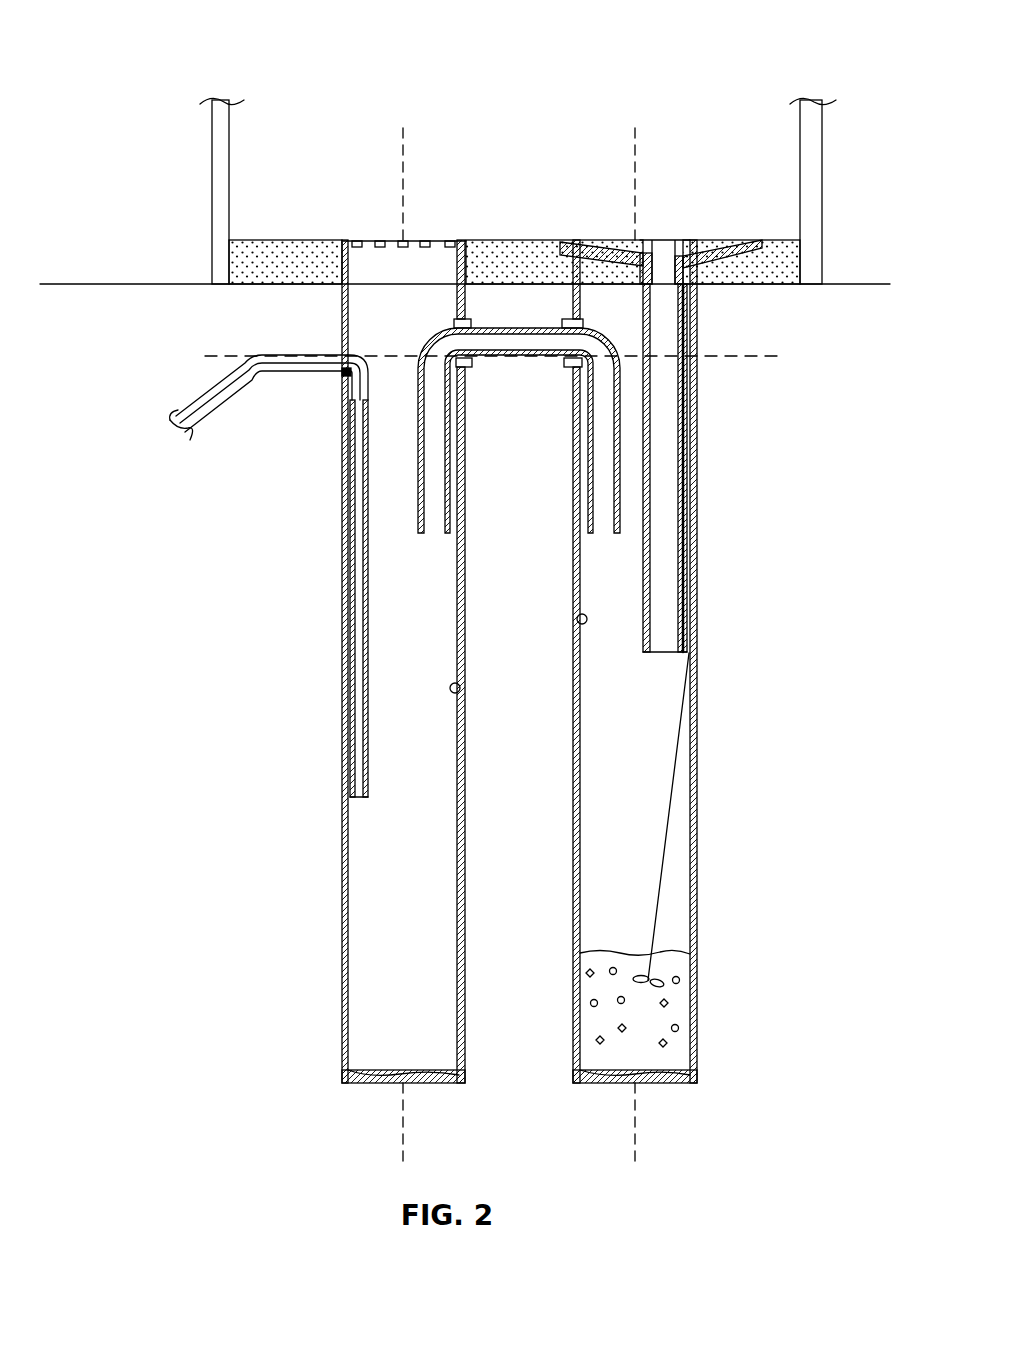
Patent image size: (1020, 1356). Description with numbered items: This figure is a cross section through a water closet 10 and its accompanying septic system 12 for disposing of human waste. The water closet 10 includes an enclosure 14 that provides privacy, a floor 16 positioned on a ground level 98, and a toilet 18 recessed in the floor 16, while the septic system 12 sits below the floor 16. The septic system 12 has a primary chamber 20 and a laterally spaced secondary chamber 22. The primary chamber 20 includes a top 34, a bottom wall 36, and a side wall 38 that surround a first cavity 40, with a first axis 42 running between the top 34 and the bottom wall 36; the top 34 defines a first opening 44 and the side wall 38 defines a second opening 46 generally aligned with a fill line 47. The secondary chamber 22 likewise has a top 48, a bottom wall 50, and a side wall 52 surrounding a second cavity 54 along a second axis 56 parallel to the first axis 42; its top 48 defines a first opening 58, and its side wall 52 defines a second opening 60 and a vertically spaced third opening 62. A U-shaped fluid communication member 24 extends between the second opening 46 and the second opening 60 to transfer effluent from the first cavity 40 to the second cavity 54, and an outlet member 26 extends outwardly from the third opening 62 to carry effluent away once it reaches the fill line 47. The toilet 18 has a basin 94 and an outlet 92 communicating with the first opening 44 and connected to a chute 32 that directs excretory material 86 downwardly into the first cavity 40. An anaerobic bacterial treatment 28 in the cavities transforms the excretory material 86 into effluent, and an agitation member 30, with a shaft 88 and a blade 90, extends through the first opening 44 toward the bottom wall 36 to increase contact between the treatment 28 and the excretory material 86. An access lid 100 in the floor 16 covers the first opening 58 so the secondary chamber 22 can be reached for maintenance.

The water closet 10 is at (124, 40).
The septic system 12 is at (142, 668).
The enclosure 14 is at (212, 165).
The floor 16 is at (277, 240).
The toilet 18 is at (660, 240).
The primary chamber 20 is at (575, 662).
The secondary chamber 22 is at (343, 758).
The fluid communication member 24 is at (545, 355).
The outlet member 26 is at (297, 355).
The anaerobic bacterial treatment 28 is at (596, 1040).
The agitation member 30 is at (692, 795).
The chute 32 is at (643, 540).
The top 34 is at (613, 274).
The bottom wall 36 is at (665, 1073).
The side wall 38 is at (577, 622).
The first cavity 40 is at (621, 812).
The first axis 42 is at (635, 1130).
The first opening 44 is at (628, 286).
The second opening 46 is at (572, 368).
The fill line 47 is at (752, 358).
The top 48 is at (380, 242).
The bottom wall 50 is at (385, 1070).
The side wall 52 is at (460, 692).
The second cavity 54 is at (389, 812).
The second axis 56 is at (403, 1130).
The first opening 58 is at (435, 243).
The second opening 60 is at (472, 366).
The third opening 62 is at (346, 382).
The excretory material 86 is at (590, 1003).
The shaft 88 is at (670, 770).
The blade 90 is at (668, 985).
The outlet 92 is at (722, 248).
The basin 94 is at (578, 248).
The ground level 98 is at (143, 284).
The access lid 100 is at (358, 241).